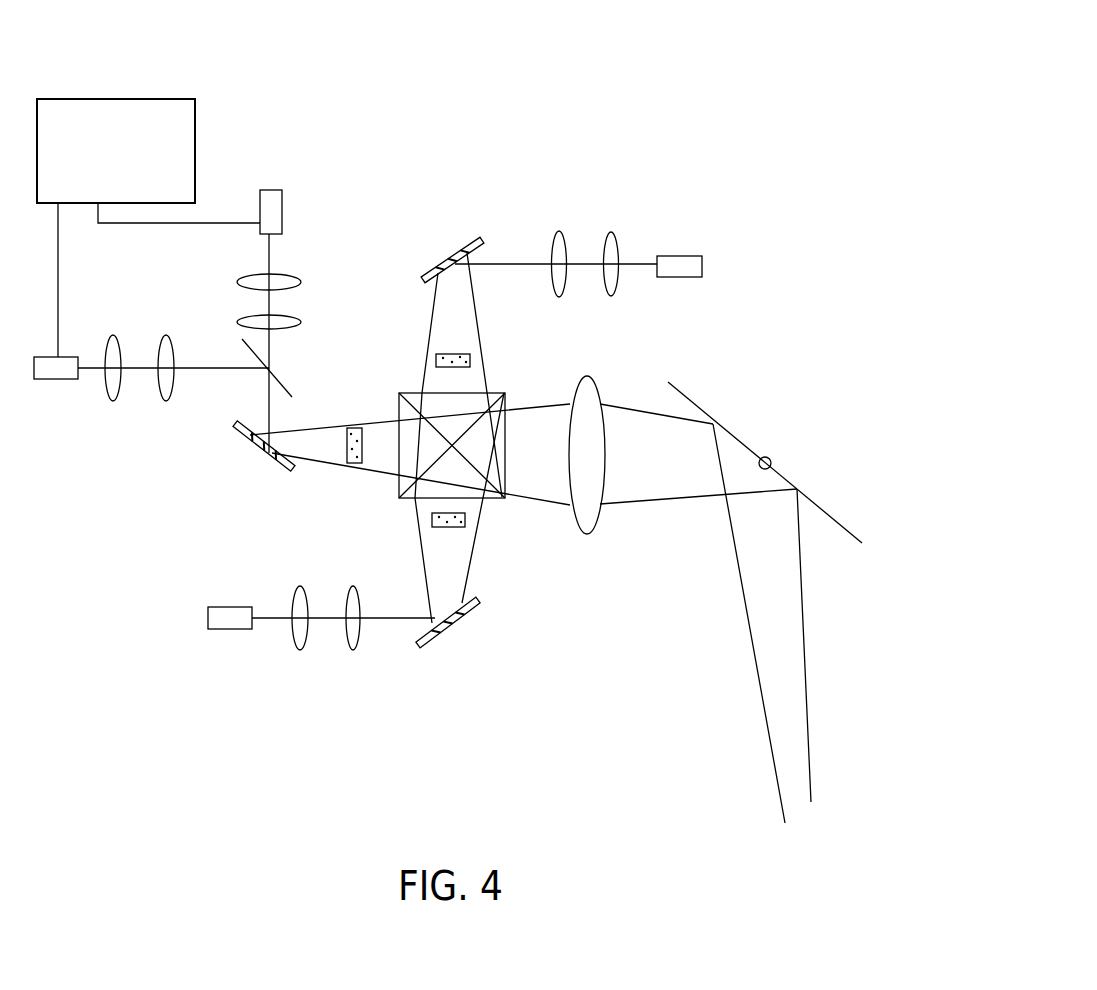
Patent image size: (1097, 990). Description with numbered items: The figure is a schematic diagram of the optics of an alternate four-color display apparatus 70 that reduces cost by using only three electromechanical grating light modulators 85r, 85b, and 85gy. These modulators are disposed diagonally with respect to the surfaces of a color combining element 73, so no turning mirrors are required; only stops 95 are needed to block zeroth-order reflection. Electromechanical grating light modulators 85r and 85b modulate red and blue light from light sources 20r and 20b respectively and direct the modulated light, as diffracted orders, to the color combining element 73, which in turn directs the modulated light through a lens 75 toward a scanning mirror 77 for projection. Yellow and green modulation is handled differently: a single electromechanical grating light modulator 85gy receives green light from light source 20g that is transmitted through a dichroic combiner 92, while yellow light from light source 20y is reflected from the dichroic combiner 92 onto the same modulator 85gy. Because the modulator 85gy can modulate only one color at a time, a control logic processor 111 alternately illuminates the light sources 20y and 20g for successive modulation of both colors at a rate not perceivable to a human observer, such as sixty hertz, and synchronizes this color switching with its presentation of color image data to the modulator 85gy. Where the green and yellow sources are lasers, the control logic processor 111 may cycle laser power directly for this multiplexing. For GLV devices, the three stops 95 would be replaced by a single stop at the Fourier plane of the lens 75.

The display apparatus 70 is at (497, 100).
The control logic processor 111 is at (195, 138).
The green light source 20g is at (282, 212).
The yellow light source 20y is at (60, 380).
The red light source 20r is at (683, 256).
The blue light source 20b is at (208, 618).
The dichroic combiner 92 is at (287, 382).
The electromechanical grating light modulator 85gy is at (280, 467).
The electromechanical grating light modulator 85r is at (478, 238).
The electromechanical grating light modulator 85b is at (420, 641).
The stop 95 is at (436, 359).
The color combining element 73 is at (500, 381).
The lens 75 is at (587, 535).
The scanning mirror 77 is at (692, 400).